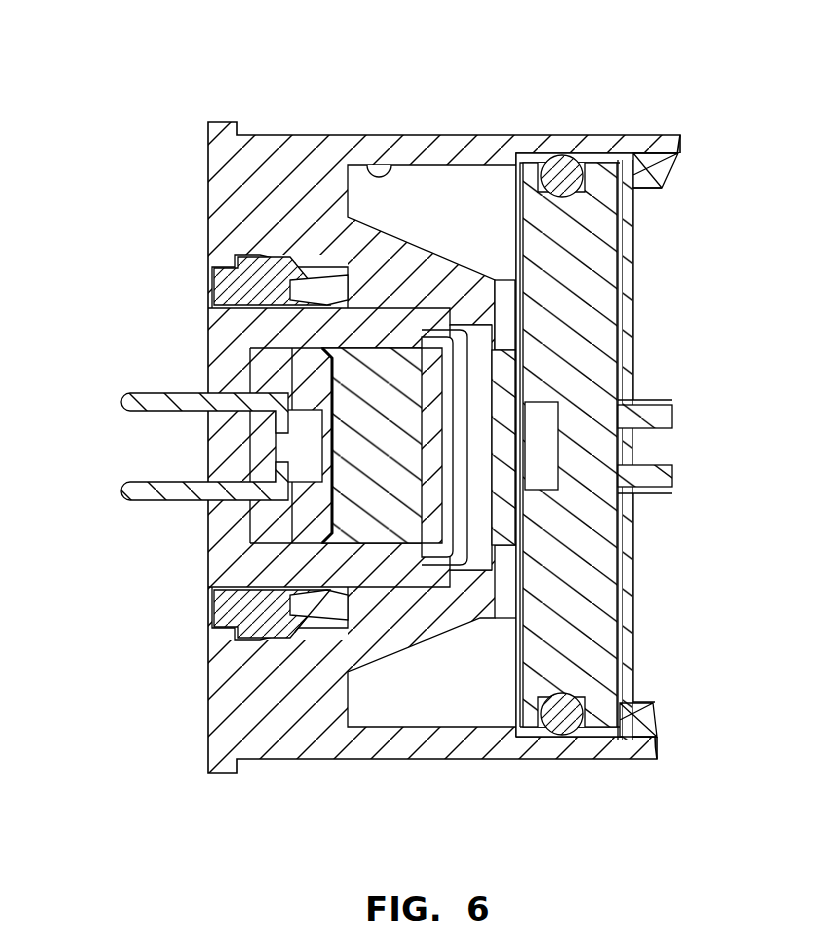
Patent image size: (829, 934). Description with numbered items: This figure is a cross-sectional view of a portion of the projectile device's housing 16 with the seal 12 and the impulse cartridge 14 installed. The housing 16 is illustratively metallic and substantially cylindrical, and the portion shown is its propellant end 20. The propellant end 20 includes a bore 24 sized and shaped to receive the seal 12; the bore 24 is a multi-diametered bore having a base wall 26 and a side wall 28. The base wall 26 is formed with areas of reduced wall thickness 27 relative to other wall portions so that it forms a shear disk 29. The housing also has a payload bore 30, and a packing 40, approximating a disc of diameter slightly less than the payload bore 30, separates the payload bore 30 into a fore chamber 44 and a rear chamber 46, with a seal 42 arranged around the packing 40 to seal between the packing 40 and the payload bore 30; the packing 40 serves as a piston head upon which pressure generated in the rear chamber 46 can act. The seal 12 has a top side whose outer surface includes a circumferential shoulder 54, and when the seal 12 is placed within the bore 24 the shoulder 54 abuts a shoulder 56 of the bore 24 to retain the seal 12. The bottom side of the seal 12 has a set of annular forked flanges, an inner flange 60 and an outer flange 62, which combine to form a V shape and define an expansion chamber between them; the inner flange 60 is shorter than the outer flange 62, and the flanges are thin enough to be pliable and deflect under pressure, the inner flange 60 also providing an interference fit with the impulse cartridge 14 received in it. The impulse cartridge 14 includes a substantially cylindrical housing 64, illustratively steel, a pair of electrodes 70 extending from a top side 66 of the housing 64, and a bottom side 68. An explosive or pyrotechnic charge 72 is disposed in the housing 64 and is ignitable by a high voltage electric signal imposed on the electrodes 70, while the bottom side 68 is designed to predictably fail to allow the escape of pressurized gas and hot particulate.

The seal 12 is at (205, 608).
The impulse cartridge 14 is at (175, 448).
The housing 16 is at (468, 128).
The propellant end 20 is at (195, 226).
The bore 24 is at (351, 220).
The base wall 26 is at (484, 374).
The areas of reduced wall thickness 27 is at (522, 333).
The side wall 28 is at (445, 584).
The shear disk 29 is at (512, 455).
The payload bore 30 is at (708, 162).
The packing 40 is at (600, 156).
The seal 42 is at (560, 172).
The fore chamber 44 is at (645, 170).
The rear chamber 46 is at (380, 165).
The circumferential shoulder 54 is at (235, 633).
The shoulder 56 is at (250, 270).
The inner flange 60 is at (305, 628).
The outer flange 62 is at (312, 600).
The housing 64 is at (213, 338).
The top side 66 is at (213, 513).
The bottom side 68 is at (452, 463).
The electrodes 70 is at (123, 401).
The explosive or pyrotechnic charge 72 is at (379, 400).